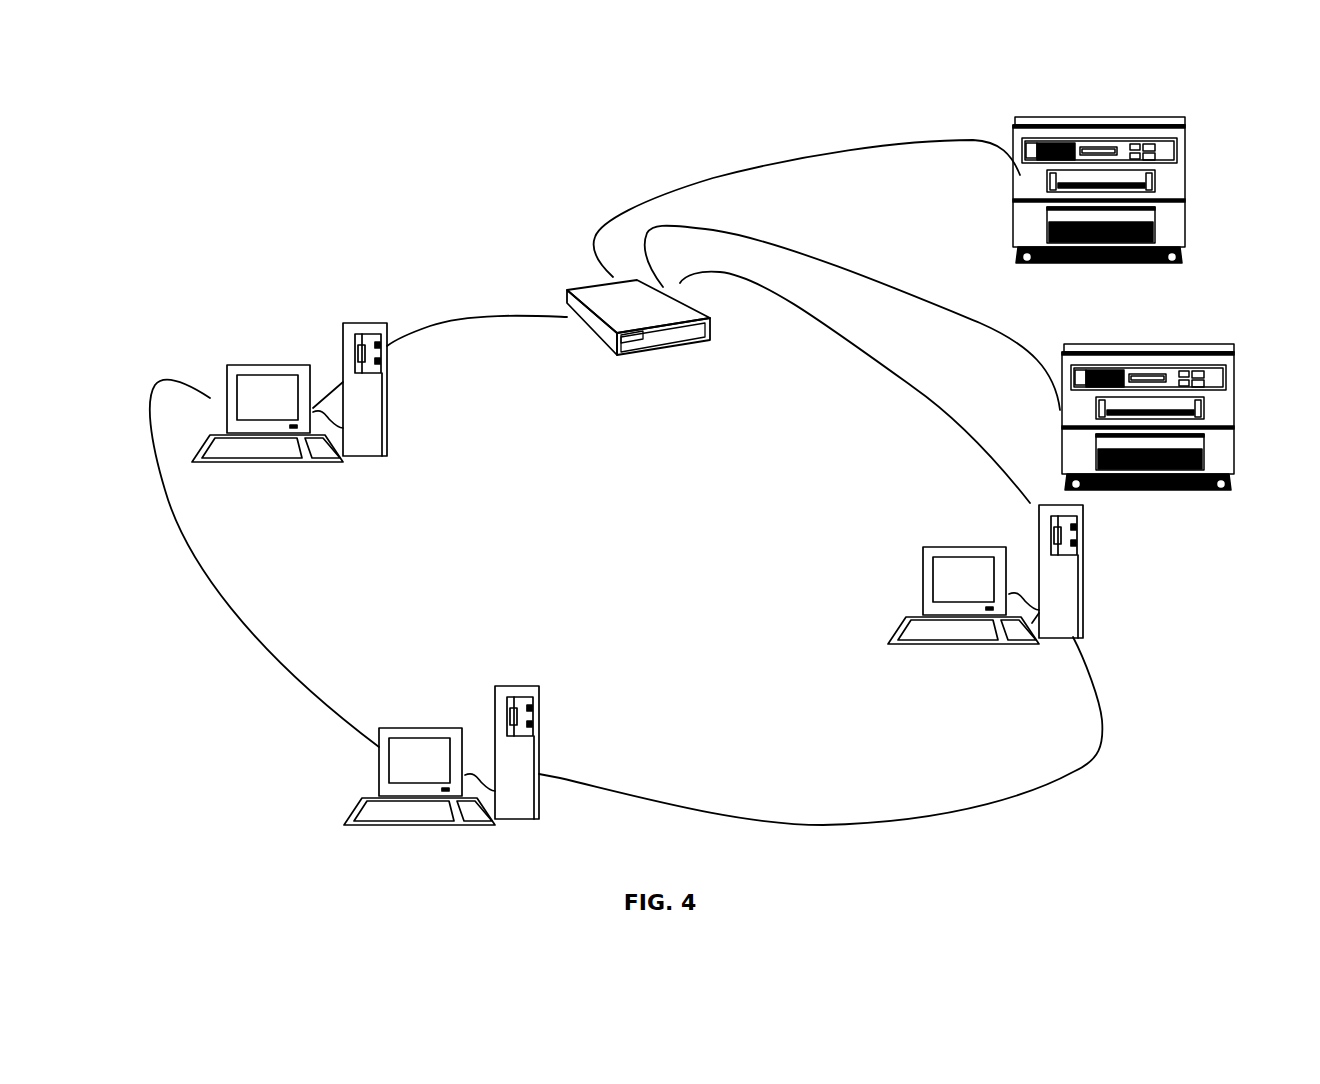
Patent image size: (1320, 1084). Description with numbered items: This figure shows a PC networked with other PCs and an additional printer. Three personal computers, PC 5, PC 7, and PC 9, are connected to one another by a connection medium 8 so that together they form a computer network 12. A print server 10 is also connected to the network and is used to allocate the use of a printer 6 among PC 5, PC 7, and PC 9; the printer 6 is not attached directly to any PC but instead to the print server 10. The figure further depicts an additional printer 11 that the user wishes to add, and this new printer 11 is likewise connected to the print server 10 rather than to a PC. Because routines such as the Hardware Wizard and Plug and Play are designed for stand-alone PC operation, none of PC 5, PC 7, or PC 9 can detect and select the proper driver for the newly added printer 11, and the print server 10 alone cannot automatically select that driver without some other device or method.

The computer network 12 is at (343, 120).
The print server 10 is at (588, 268).
The PC 5 is at (287, 462).
The PC 9 is at (495, 673).
The PC 7 is at (955, 653).
The printer 6 is at (1172, 268).
The additional printer 11 is at (1198, 492).
The connection medium 8 is at (1003, 813).